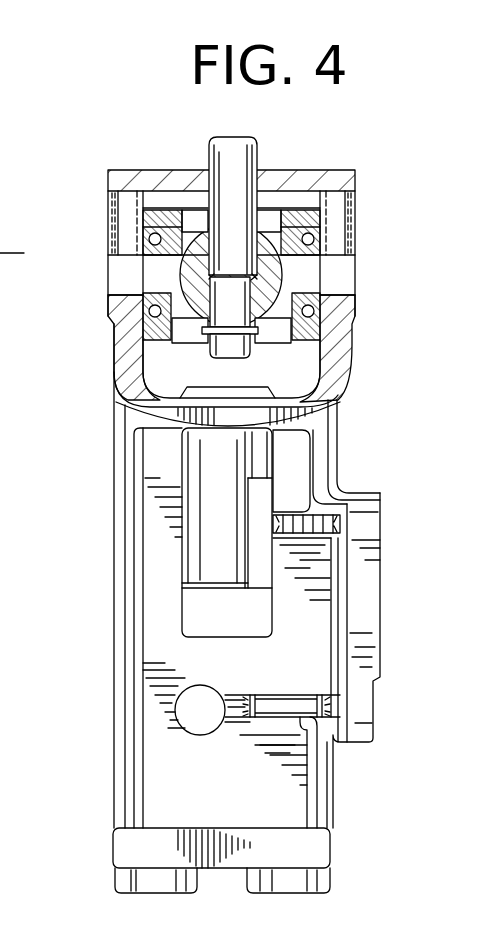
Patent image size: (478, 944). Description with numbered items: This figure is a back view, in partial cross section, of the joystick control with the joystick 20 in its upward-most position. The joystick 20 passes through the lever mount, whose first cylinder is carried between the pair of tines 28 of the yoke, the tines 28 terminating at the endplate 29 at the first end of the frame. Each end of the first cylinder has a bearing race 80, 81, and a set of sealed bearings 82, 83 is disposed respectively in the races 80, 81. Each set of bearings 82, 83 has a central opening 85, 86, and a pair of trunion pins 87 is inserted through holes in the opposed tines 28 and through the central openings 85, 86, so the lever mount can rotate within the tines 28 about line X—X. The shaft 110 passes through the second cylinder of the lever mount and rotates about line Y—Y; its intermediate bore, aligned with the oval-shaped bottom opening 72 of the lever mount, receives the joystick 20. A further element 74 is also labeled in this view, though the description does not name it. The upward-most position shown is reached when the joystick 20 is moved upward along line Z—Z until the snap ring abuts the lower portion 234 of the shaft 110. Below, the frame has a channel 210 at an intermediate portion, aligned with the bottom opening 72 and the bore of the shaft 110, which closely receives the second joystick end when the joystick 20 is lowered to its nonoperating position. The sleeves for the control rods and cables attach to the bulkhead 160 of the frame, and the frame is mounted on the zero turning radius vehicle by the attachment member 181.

The joystick 20 is at (260, 140).
The tines 28 is at (353, 327).
The endplate 29 is at (327, 188).
The bottom opening 72 is at (190, 337).
The spherical member 74 is at (263, 227).
The bearing race 80 is at (113, 198).
The bearing race 81 is at (329, 221).
The sealed bearings 82 is at (117, 226).
The sealed bearings 83 is at (326, 243).
The central opening 85 is at (113, 258).
The central opening 86 is at (348, 265).
The trunion pins 87 is at (357, 281).
The shaft 110 is at (203, 240).
The bulkhead 160 is at (268, 860).
The attachment member 181 is at (380, 534).
The channel 210 is at (207, 390).
The lower portion of the shaft 234 is at (258, 331).